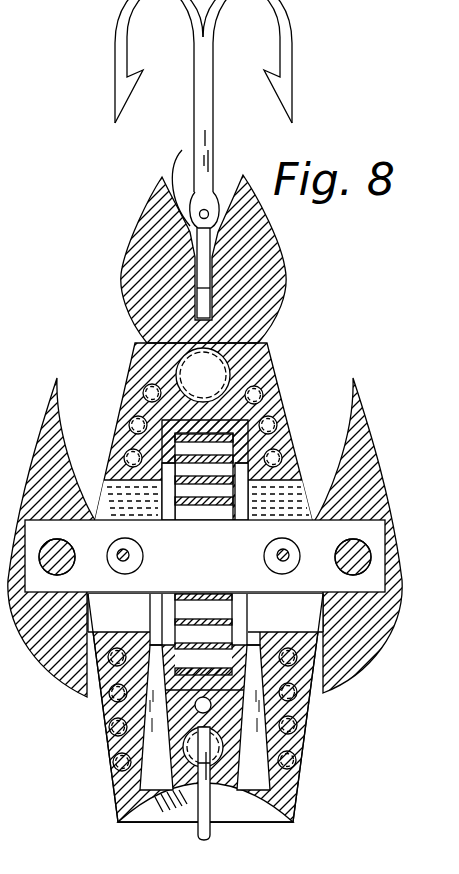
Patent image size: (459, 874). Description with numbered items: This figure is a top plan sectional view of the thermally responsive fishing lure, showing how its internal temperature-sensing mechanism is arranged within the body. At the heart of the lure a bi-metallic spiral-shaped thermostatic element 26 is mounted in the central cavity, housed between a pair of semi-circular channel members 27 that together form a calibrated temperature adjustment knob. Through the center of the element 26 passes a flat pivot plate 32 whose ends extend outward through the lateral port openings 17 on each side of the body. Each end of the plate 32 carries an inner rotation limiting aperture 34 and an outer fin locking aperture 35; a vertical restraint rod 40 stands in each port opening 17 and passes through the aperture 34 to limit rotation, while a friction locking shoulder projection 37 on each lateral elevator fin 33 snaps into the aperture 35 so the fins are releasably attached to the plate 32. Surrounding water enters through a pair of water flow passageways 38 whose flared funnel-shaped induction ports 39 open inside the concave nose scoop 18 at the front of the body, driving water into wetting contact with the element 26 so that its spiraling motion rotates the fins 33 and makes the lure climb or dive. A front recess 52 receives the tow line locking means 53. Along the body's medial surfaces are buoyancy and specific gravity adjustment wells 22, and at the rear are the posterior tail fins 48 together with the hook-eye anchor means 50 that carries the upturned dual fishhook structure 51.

The upturned dual fishhook structure 51 is at (210, 47).
The hook-eye anchor means 50 is at (182, 151).
The posterior tail fins 48 is at (123, 250).
The buoyancy and specific gravity adjustment wells 22 is at (219, 399).
The lateral elevator fins 33 is at (65, 443).
The rotation limiting apertures 34 is at (112, 541).
The fin locking apertures 35 is at (74, 553).
The friction locking shoulder projection 37 is at (63, 567).
The vertical restraint rods 40 is at (126, 552).
The bi-metallic heat sensitive spiral-shaped thermostatic element 26 is at (200, 594).
The flat pivot plate 32 is at (249, 571).
The lateral port openings 17 is at (118, 623).
The water flow passageways 38 is at (154, 612).
The semi-circular channel members 27 is at (239, 643).
The funnel-shaped water induction ports 39 is at (257, 808).
The recess 52 is at (219, 752).
The tow line locking means 53 is at (207, 838).
The nose scoop 18 is at (268, 818).